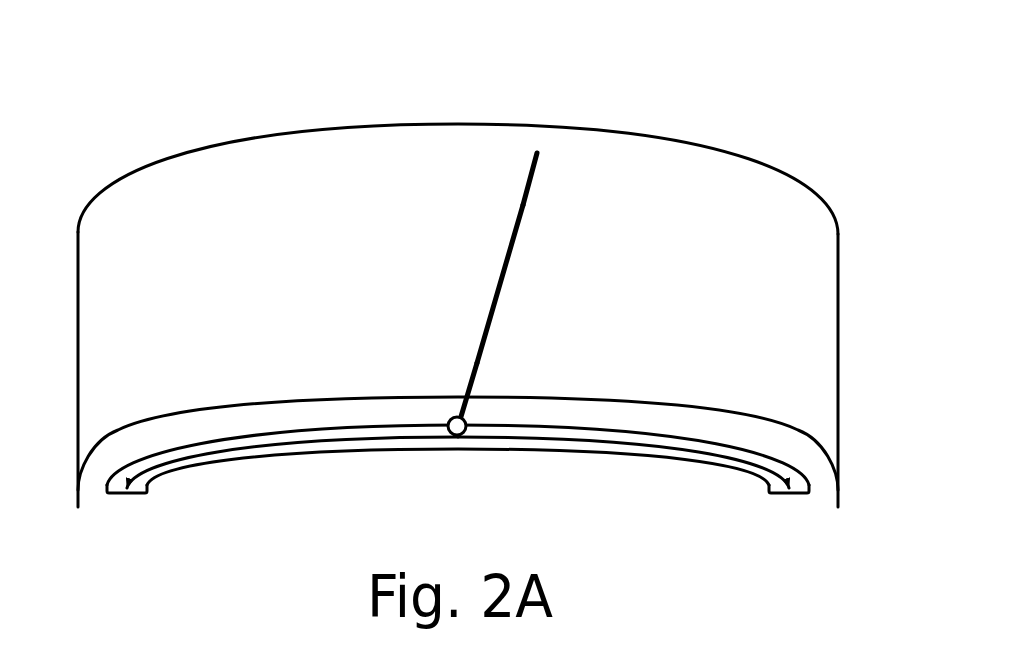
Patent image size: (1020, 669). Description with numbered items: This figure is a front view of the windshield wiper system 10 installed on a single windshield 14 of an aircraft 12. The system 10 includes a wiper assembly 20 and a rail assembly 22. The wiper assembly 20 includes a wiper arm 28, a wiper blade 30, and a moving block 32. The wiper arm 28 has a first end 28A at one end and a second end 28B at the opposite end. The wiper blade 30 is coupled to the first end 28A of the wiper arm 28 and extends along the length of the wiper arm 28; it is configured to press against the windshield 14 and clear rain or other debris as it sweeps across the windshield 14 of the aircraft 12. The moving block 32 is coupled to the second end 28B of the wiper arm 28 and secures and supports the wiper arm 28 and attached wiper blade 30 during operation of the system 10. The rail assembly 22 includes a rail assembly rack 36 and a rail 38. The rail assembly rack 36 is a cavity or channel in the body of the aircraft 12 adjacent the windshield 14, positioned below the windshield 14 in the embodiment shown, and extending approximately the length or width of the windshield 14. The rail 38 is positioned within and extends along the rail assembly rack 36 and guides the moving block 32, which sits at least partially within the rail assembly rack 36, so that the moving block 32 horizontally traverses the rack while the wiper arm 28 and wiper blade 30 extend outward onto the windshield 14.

The system 10 is at (606, 492).
The aircraft 12 is at (133, 103).
The windshield 14 is at (307, 152).
The wiper assembly 20 is at (502, 212).
The rail assembly 22 is at (212, 505).
The wiper arm 28 is at (480, 363).
The first end 28A is at (550, 158).
The second end 28B is at (485, 405).
The wiper blade 30 is at (523, 205).
The moving block 32 is at (447, 437).
The rail assembly rack 36 is at (300, 458).
The rail 38 is at (528, 441).